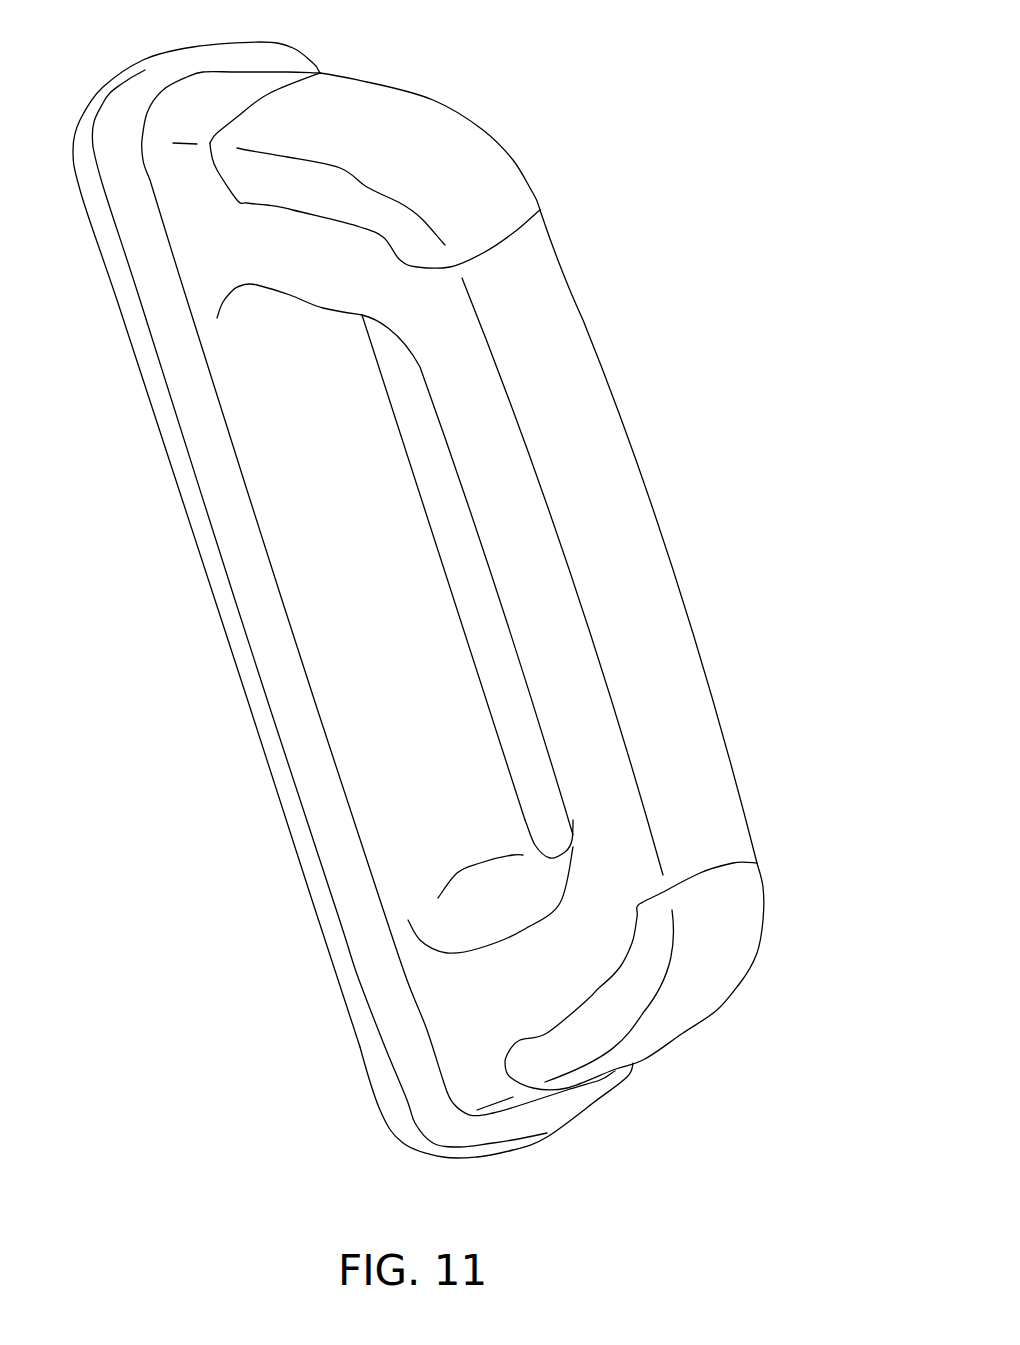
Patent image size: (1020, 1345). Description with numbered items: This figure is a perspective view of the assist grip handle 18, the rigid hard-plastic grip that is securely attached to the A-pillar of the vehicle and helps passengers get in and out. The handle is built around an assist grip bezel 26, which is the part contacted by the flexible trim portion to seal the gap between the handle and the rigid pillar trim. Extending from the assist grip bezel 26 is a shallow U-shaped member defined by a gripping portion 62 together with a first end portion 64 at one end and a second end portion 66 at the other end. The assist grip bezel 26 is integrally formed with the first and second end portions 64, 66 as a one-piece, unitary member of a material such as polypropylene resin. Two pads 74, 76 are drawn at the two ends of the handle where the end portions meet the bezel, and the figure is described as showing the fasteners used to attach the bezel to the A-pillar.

The assist grip handle 18 is at (645, 428).
The assist grip bezel 26 is at (293, 702).
The gripping portion 62 is at (637, 608).
The first end portion 64 is at (290, 253).
The second end portion 66 is at (502, 985).
The upper grip pad 74 is at (392, 123).
The lower grip pad 76 is at (682, 1007).